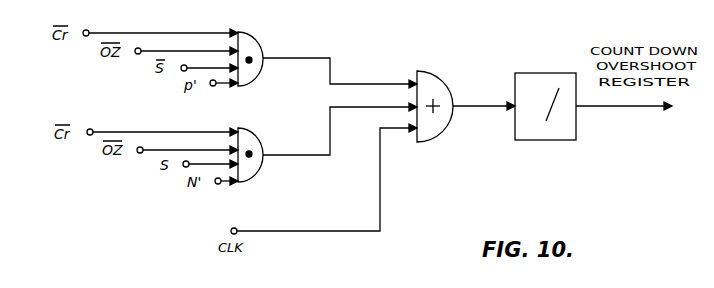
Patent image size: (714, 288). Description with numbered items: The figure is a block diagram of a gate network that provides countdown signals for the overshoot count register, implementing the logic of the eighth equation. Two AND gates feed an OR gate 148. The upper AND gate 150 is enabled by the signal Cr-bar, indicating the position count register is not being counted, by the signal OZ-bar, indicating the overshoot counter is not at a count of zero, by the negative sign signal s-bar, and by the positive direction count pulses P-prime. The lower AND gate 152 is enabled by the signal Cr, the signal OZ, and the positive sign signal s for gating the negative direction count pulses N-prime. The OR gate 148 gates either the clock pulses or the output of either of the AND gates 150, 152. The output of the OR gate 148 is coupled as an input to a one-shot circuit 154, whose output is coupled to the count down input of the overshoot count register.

The OR gate 148 is at (428, 80).
The AND gate 150 is at (258, 43).
The AND gate 152 is at (256, 140).
The one-shot circuit 154 is at (544, 75).